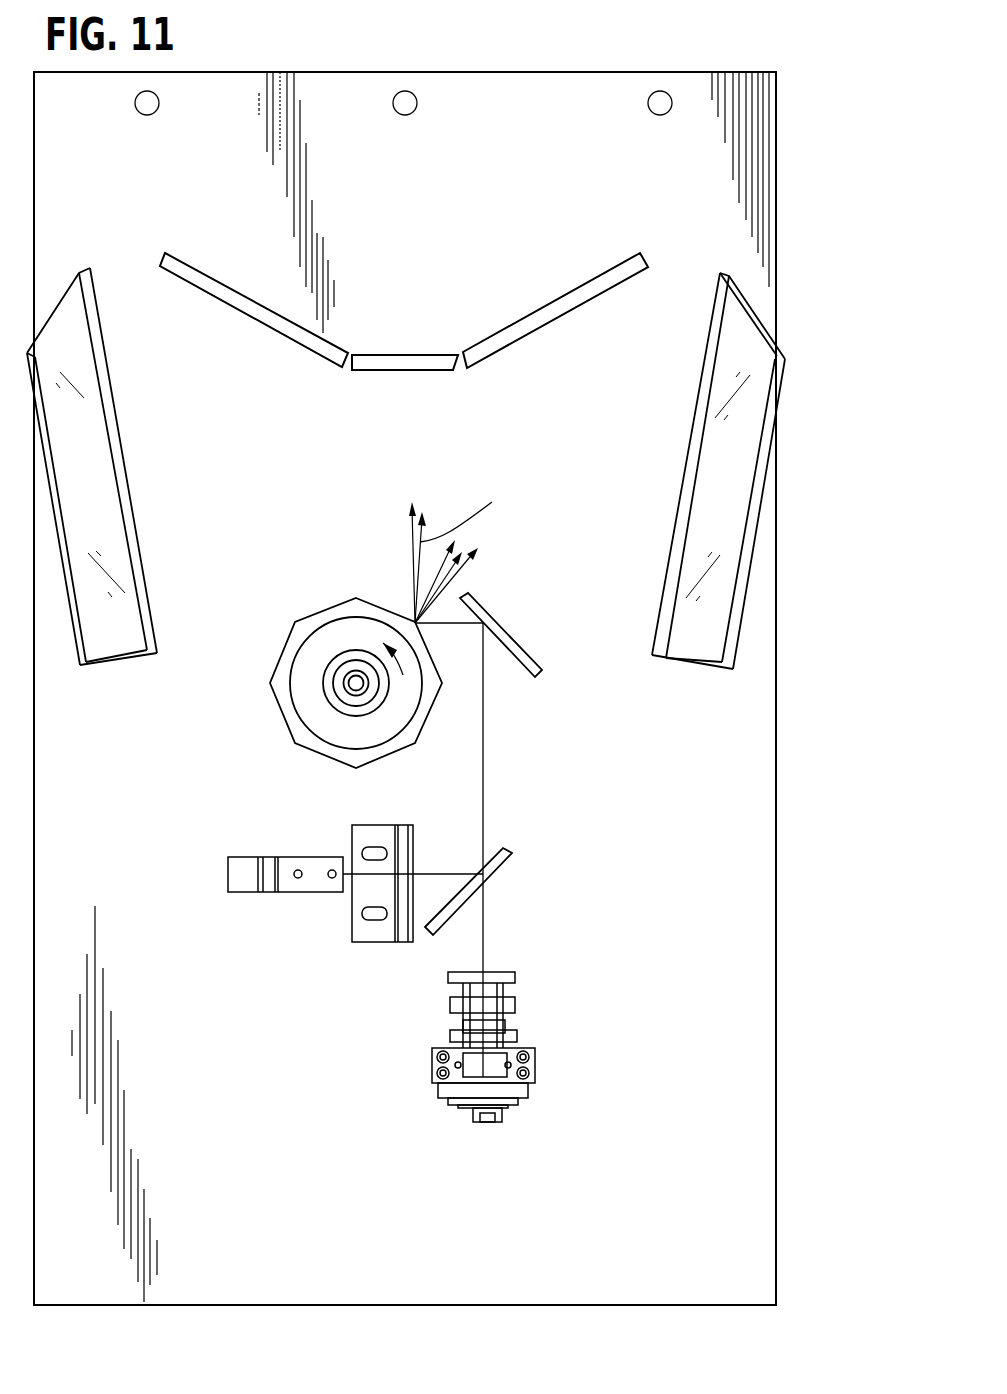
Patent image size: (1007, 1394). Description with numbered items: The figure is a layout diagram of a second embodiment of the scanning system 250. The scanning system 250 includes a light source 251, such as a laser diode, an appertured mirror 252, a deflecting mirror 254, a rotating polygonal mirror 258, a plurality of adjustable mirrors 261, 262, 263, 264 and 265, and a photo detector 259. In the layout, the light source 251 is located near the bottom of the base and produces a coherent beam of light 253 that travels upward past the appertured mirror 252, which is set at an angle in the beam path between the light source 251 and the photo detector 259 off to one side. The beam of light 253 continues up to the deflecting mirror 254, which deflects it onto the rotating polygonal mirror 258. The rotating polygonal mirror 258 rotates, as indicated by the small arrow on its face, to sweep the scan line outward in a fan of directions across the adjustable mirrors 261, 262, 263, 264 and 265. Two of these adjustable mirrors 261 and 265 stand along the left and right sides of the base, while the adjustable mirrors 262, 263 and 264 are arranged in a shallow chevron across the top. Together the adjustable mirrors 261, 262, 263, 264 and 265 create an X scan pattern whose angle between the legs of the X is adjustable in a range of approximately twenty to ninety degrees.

The scanning system 250 is at (790, 747).
The light source 251 is at (535, 1048).
The appertured mirror 252 is at (508, 863).
The coherent beam of light 253 is at (483, 737).
The deflecting mirror 254 is at (542, 662).
The rotating polygonal mirror 258 is at (285, 713).
The photo detector 259 is at (260, 890).
The adjustable mirror 261 is at (128, 513).
The adjustable mirror 262 is at (242, 293).
The adjustable mirror 263 is at (408, 350).
The adjustable mirror 264 is at (560, 295).
The adjustable mirror 265 is at (752, 445).